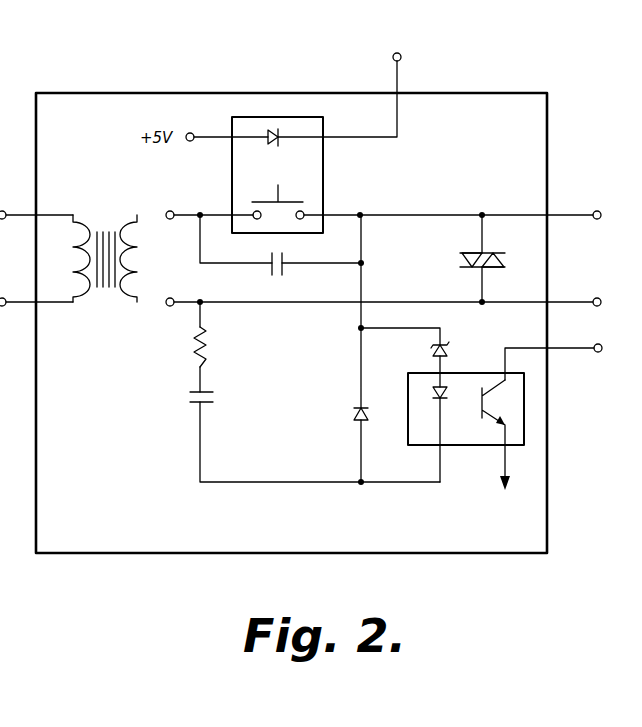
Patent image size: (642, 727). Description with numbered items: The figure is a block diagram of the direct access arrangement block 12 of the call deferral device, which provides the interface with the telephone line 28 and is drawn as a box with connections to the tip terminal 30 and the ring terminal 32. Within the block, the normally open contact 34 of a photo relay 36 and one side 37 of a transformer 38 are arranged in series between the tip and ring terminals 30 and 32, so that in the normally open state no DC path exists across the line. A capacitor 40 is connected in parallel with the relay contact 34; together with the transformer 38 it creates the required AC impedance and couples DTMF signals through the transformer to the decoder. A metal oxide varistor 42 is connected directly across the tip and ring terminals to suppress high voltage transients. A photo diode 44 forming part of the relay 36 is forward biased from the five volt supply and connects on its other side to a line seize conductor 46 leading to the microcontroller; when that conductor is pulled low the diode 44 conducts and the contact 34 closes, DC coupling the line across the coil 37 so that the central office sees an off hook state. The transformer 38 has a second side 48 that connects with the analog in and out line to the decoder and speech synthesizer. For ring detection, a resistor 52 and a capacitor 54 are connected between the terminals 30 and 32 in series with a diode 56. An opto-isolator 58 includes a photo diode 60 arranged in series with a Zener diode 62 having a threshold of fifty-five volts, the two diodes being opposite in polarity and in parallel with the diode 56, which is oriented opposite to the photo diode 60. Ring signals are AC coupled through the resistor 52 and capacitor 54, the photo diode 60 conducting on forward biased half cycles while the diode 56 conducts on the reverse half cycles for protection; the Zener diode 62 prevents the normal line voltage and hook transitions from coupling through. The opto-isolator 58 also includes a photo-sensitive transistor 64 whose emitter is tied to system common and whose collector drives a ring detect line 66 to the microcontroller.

The direct access arrangement (DAA) block 12 is at (430, 553).
The telephone line 28 is at (9, 600).
The tip terminal 30 is at (600, 219).
The ring terminal 32 is at (600, 306).
The normally open contact 34 is at (303, 202).
The photo relay 36 is at (232, 184).
The one side of transformer 37 is at (138, 256).
The transformer 38 is at (108, 279).
The capacitor 40 is at (283, 258).
The metal oxide varistor 42 is at (462, 258).
The photo diode 44 is at (279, 128).
The line seize conductor 46 is at (397, 125).
The second side of transformer 48 is at (81, 240).
The resistor 52 is at (200, 353).
The capacitor 54 is at (190, 405).
The diode 56 is at (360, 421).
The opto-isolator 58 is at (450, 421).
The photo diode 60 is at (437, 391).
The Zener diode 62 is at (447, 347).
The photo-sensitive transistor 64 is at (482, 392).
The ring detect line 66 is at (599, 346).